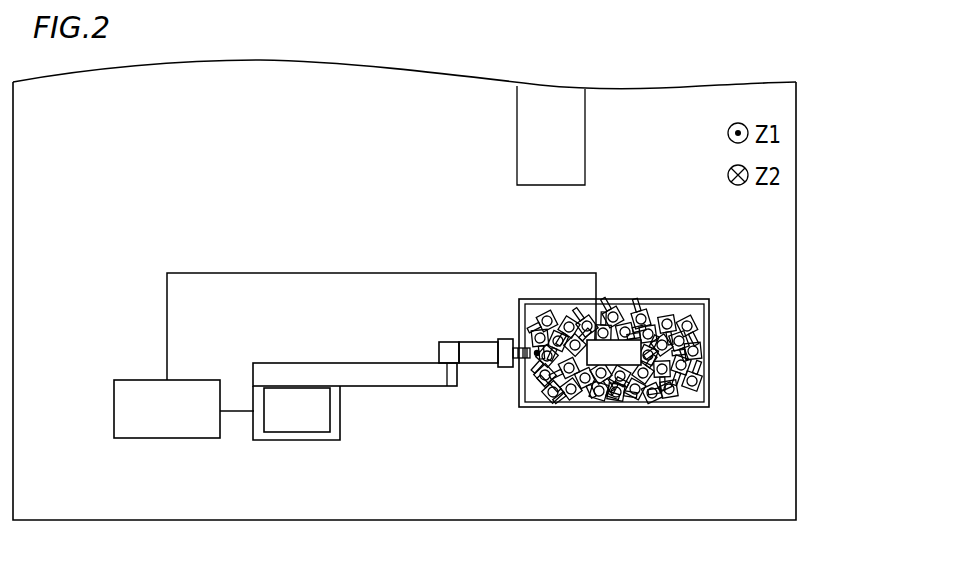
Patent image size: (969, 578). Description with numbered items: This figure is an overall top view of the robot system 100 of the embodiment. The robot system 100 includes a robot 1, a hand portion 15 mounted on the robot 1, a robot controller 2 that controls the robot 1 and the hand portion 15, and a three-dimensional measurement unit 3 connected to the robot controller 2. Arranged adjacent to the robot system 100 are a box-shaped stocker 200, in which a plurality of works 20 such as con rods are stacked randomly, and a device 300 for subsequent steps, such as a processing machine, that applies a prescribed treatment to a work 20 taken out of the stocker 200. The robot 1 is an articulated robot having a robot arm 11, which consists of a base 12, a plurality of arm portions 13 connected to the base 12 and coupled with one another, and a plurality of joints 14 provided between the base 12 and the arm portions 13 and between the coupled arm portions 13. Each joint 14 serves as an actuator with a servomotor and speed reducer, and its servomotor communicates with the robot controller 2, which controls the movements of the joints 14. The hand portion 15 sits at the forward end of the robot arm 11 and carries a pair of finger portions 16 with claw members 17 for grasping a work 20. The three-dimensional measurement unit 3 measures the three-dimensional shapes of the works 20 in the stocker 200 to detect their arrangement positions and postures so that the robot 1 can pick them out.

The robot system 100 is at (145, 222).
The device for subsequent steps 300 is at (577, 143).
The stocker 200 is at (665, 299).
The works 20 is at (692, 317).
The three-dimensional measurement unit 3 is at (616, 355).
The robot 1 is at (321, 394).
The robot controller 2 is at (114, 416).
The robot arm 11 is at (396, 375).
The base 12 is at (295, 440).
The arm portions 13 is at (357, 388).
The joints 14 is at (449, 344).
The hand portion 15 is at (506, 341).
The finger portions 16 is at (514, 367).
The claw members 17 is at (533, 357).